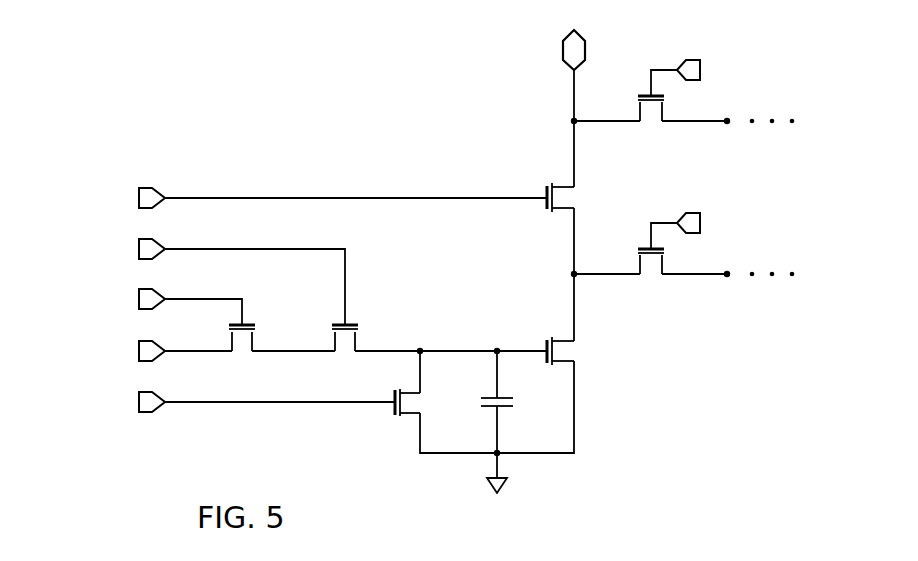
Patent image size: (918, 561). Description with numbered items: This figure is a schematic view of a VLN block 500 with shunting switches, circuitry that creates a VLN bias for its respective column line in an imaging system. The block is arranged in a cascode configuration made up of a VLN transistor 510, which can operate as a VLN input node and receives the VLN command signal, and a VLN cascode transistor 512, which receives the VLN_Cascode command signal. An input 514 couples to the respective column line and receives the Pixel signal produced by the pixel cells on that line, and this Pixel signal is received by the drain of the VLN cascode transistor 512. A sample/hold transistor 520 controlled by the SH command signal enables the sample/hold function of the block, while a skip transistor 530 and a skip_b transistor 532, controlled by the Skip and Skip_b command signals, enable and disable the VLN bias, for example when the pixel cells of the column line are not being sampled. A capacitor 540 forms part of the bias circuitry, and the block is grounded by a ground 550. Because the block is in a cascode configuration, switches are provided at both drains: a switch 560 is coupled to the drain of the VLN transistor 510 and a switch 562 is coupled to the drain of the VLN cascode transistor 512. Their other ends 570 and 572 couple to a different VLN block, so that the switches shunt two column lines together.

The VLN block 500 is at (234, 36).
The input 514 is at (567, 50).
The VLN cascode transistor 512 is at (565, 190).
The VLN transistor 510 is at (565, 345).
The sample/hold transistor 520 is at (345, 347).
The skip_b transistor 532 is at (242, 347).
The skip transistor 530 is at (412, 407).
The capacitor 540 is at (514, 400).
The ground 550 is at (503, 490).
The switch 560 is at (651, 270).
The switch 562 is at (651, 117).
The end 570 is at (690, 277).
The end 572 is at (690, 124).